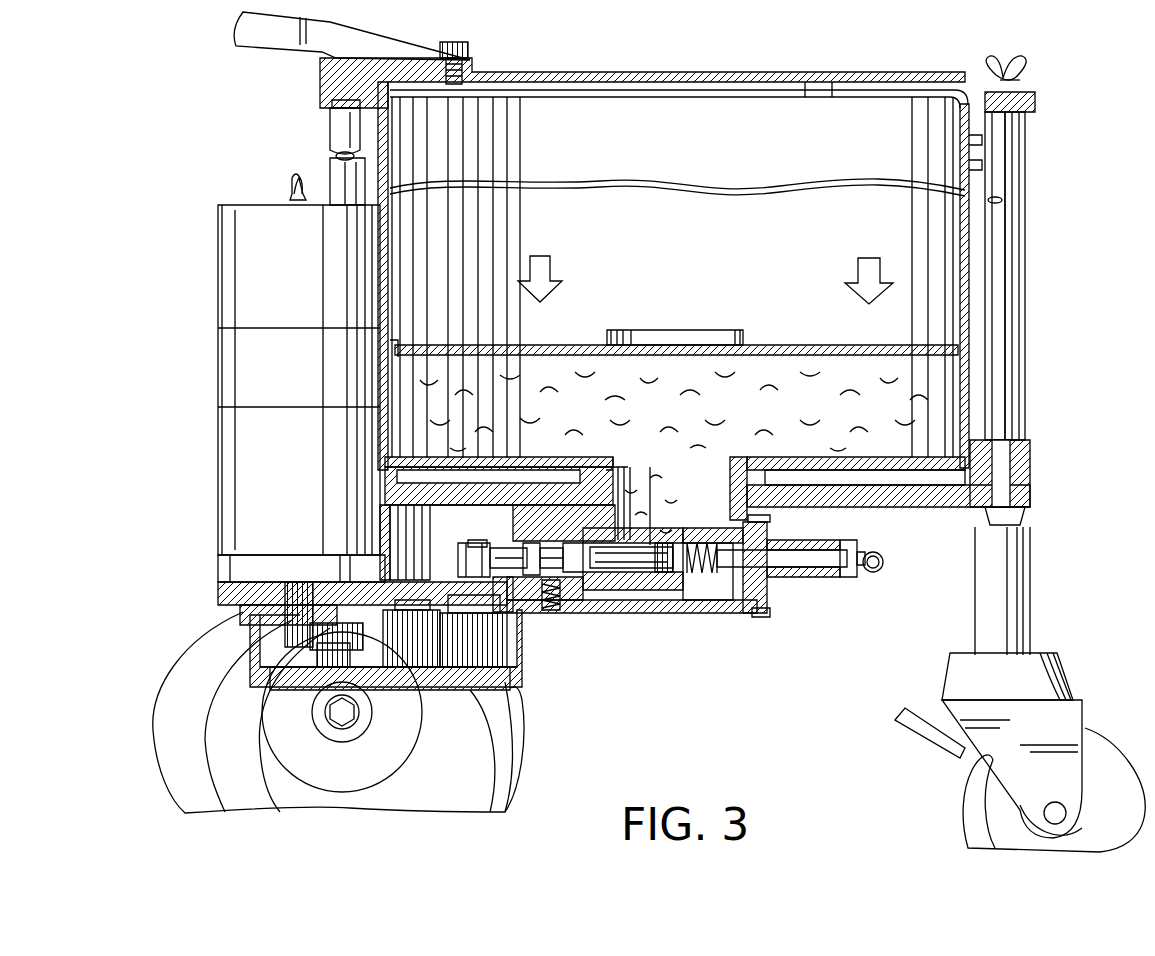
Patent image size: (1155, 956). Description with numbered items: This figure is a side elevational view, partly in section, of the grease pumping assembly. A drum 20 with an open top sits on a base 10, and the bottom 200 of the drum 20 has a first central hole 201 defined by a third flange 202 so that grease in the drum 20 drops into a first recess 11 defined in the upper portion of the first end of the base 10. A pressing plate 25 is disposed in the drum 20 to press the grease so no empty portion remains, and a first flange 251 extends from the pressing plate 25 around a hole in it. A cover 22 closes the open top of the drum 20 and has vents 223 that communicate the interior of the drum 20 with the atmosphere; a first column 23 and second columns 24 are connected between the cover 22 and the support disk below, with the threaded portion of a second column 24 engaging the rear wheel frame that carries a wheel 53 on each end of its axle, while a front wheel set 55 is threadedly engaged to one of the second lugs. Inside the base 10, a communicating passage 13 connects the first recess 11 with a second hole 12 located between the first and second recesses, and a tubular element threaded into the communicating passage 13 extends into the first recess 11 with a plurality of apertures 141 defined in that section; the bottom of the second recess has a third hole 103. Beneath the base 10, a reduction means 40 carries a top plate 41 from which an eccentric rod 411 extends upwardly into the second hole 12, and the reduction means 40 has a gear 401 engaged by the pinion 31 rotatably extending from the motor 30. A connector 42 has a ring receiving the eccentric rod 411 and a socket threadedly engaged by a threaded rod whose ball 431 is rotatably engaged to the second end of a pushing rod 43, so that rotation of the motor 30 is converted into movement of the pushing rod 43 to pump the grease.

The base 10 is at (750, 613).
The first recess 11 is at (708, 598).
The second hole 12 is at (405, 518).
The communicating passage 13 is at (565, 610).
The drum 20 is at (972, 238).
The cover 22 is at (762, 72).
The first column 23 is at (1018, 350).
The second column 24 is at (340, 172).
The pressing plate 25 is at (812, 345).
The motor 30 is at (232, 568).
The pinion 31 is at (248, 628).
The reduction means 40 is at (305, 618).
The top plate 41 is at (520, 695).
The connector 42 is at (462, 560).
The pushing rod 43 is at (618, 583).
The wheel 53 is at (180, 762).
The front wheel set 55 is at (1072, 668).
The third hole 103 is at (303, 622).
The apertures 141 is at (655, 520).
The bottom 200 is at (908, 460).
The first central hole 201 is at (740, 460).
The third flange 202 is at (770, 478).
The vents 223 is at (325, 102).
The first flange 251 is at (742, 330).
The gear 401 is at (320, 648).
The eccentric rod 411 is at (478, 540).
The ball 431 is at (585, 622).